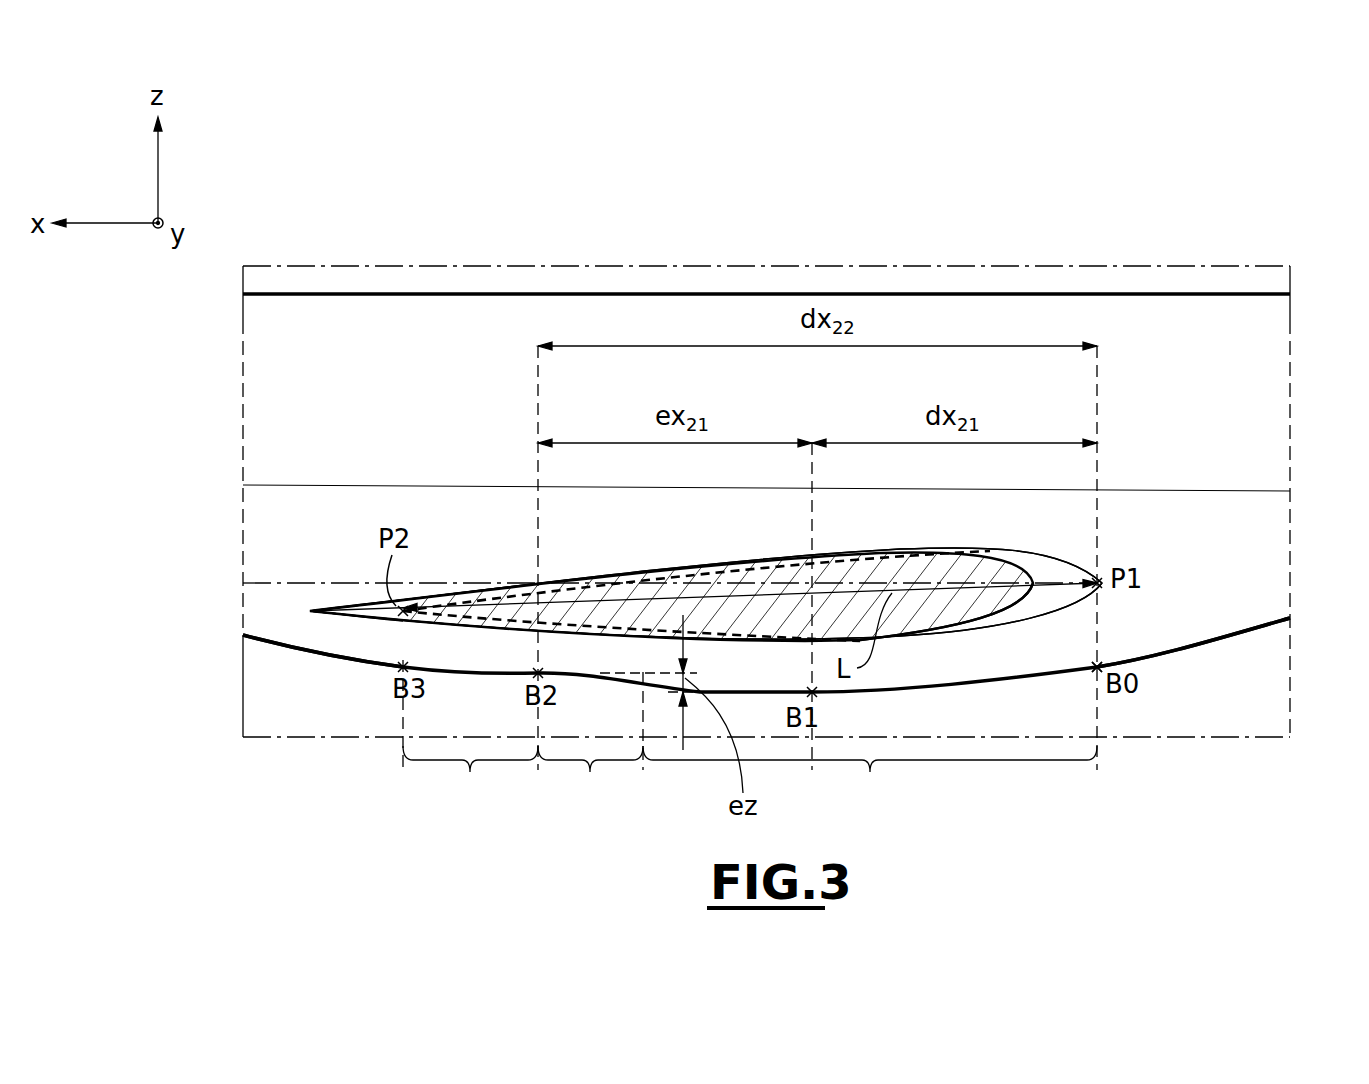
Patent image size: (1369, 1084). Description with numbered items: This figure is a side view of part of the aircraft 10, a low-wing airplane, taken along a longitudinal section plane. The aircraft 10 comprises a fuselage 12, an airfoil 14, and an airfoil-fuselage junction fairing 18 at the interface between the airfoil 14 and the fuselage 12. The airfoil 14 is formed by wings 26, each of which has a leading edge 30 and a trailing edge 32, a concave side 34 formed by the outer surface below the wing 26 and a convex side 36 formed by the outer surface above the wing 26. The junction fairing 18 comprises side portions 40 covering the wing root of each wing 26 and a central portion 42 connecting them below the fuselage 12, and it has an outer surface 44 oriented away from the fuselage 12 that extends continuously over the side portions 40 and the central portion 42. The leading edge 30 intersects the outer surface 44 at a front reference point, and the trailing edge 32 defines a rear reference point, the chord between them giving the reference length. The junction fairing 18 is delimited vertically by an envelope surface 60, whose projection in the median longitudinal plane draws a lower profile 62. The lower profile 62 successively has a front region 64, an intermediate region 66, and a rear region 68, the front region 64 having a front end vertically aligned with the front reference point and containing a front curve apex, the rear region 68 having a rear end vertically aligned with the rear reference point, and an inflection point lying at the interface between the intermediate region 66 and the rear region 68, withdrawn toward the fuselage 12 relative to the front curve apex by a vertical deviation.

The aircraft 10 is at (1308, 230).
The fuselage 12 is at (1140, 345).
The airfoil 14 is at (993, 620).
The airfoil-fuselage junction fairing 18 is at (1175, 525).
The wing 26 is at (1062, 595).
The leading edge 30 is at (1055, 556).
The trailing edge 32 is at (368, 606).
The concave side 34 is at (913, 632).
The convex side 36 is at (1000, 548).
The side portion 40 is at (1183, 613).
The central portion 42 is at (333, 644).
The outer surface 44 is at (1231, 545).
The envelope surface 60 is at (1093, 668).
The lower profile 62 is at (1170, 655).
The front region 64 is at (870, 782).
The intermediate region 66 is at (590, 782).
The rear region 68 is at (470, 782).